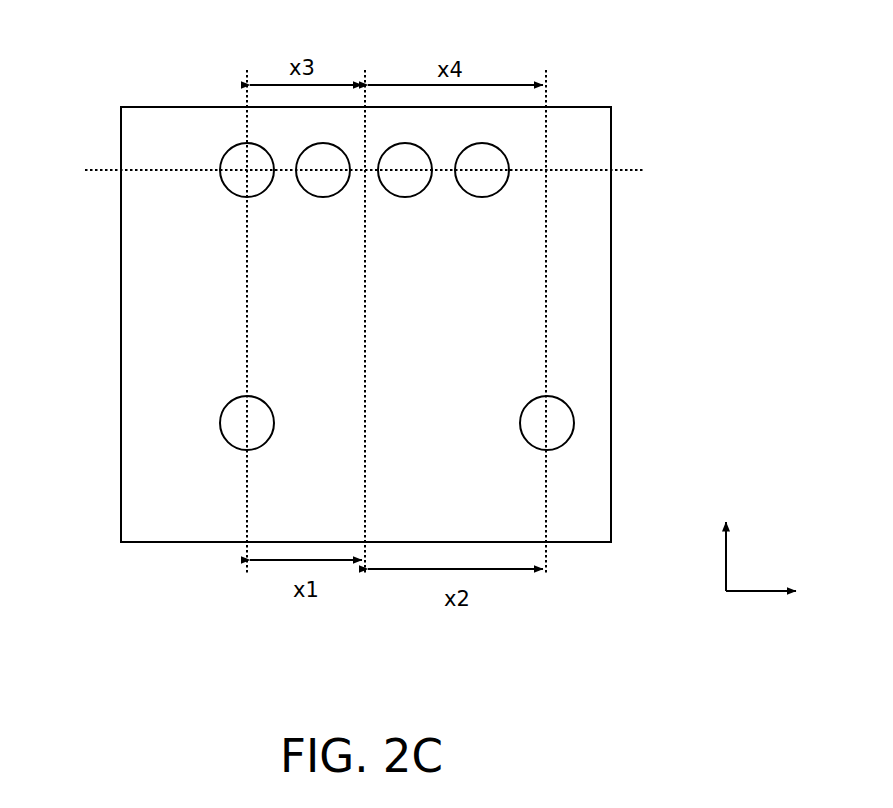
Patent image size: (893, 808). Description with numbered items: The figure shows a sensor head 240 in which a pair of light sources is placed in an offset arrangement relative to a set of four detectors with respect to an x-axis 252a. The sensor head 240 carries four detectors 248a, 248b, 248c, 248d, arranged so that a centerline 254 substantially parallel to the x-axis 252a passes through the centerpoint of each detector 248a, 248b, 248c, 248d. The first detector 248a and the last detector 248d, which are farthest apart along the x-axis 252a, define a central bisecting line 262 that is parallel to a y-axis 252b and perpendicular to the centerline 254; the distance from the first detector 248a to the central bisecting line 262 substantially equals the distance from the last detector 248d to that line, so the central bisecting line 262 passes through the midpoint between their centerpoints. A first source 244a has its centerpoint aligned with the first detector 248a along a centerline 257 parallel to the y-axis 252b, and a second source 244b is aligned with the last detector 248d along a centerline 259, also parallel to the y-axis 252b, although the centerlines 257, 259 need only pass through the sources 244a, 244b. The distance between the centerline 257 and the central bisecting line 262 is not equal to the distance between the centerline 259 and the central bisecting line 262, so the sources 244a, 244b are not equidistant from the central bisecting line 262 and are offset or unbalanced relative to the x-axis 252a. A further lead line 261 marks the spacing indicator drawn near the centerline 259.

The sensor head 240 is at (611, 128).
The first source 244a is at (221, 434).
The second source 244b is at (574, 434).
The first detector 248a is at (222, 181).
The detector 248b is at (322, 197).
The detector 248c is at (410, 197).
The last detector 248d is at (508, 183).
The x-axis 252a is at (763, 590).
The y-axis 252b is at (725, 579).
The centerline 254 is at (636, 168).
The centerline 257 is at (247, 573).
The centerline 259 is at (547, 553).
The spacing x4 indicator 261 is at (547, 85).
The central bisecting line 262 is at (365, 571).